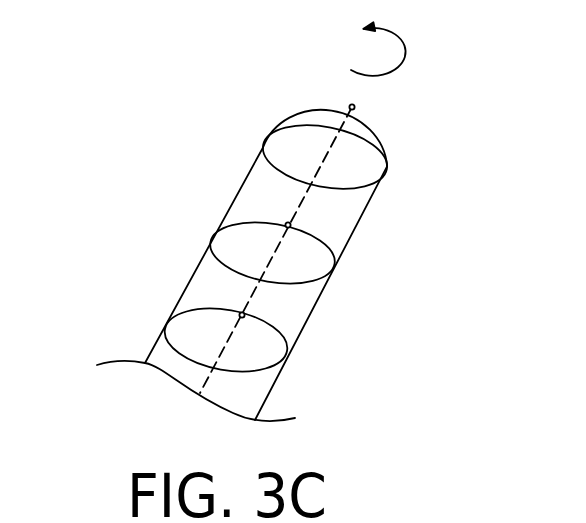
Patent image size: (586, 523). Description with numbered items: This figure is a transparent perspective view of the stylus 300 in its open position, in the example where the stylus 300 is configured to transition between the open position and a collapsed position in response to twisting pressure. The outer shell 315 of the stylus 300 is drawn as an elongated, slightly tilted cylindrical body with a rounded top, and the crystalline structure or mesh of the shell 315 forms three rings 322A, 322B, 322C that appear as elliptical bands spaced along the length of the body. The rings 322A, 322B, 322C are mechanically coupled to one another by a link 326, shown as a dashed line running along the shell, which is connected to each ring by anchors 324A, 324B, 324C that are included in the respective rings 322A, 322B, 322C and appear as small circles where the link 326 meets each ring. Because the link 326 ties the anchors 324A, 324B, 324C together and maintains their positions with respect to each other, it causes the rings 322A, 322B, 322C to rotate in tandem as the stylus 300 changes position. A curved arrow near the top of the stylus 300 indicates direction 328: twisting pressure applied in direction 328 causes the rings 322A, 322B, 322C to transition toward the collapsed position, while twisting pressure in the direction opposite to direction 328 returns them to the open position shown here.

The stylus 300 is at (282, 221).
The shell 315 is at (194, 269).
The ring 322A is at (382, 127).
The ring 322B is at (333, 249).
The ring 322C is at (286, 346).
The anchor 324A is at (354, 105).
The anchor 324B is at (291, 225).
The anchor 324C is at (244, 314).
The link 326 is at (301, 205).
The direction 328 is at (378, 49).